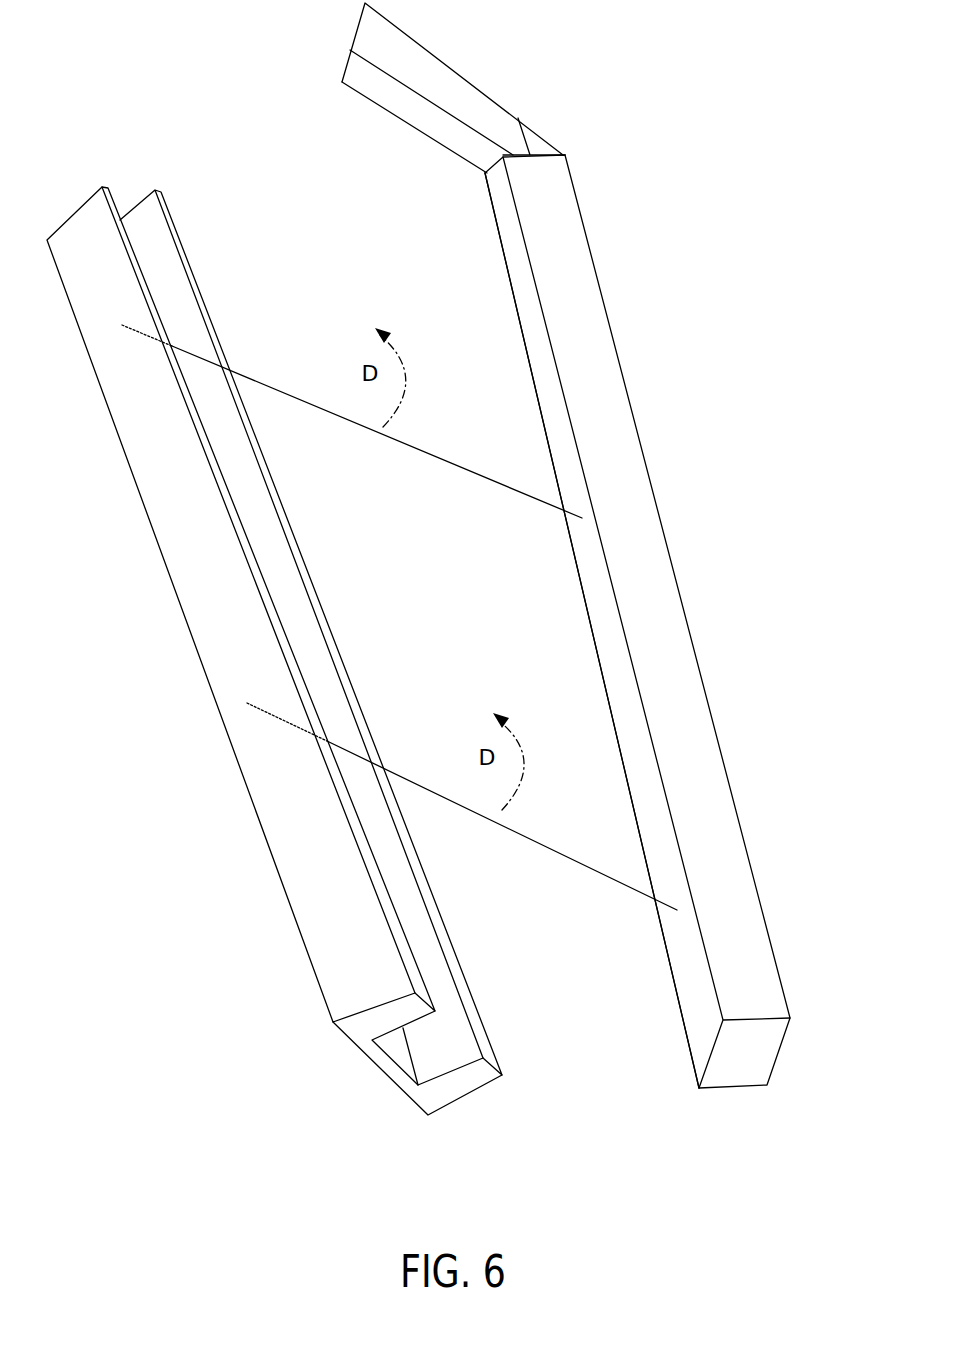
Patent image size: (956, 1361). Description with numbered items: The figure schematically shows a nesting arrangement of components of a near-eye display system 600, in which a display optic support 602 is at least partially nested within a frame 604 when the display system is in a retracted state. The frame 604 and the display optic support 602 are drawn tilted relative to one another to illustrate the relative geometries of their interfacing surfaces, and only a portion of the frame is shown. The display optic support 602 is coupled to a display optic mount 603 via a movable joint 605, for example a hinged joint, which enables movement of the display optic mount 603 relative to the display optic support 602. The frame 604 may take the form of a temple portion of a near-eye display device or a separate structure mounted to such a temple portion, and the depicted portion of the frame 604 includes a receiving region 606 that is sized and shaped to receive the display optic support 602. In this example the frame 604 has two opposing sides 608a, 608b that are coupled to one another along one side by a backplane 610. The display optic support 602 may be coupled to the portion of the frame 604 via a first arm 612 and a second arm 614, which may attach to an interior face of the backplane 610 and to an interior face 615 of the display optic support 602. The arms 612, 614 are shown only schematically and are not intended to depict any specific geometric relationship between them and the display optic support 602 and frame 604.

The near-eye display system 600 is at (125, 47).
The display optic support 602 is at (582, 222).
The display optic mount 603 is at (437, 55).
The movable joint 605 is at (543, 135).
The frame 604 is at (295, 661).
The receiving region 606 is at (438, 1035).
The first opposing side 608a is at (373, 1012).
The second opposing side 608b is at (490, 1073).
The backplane 610 is at (387, 1068).
The first arm 612 is at (440, 458).
The second arm 614 is at (558, 853).
The interior face 615 is at (605, 633).